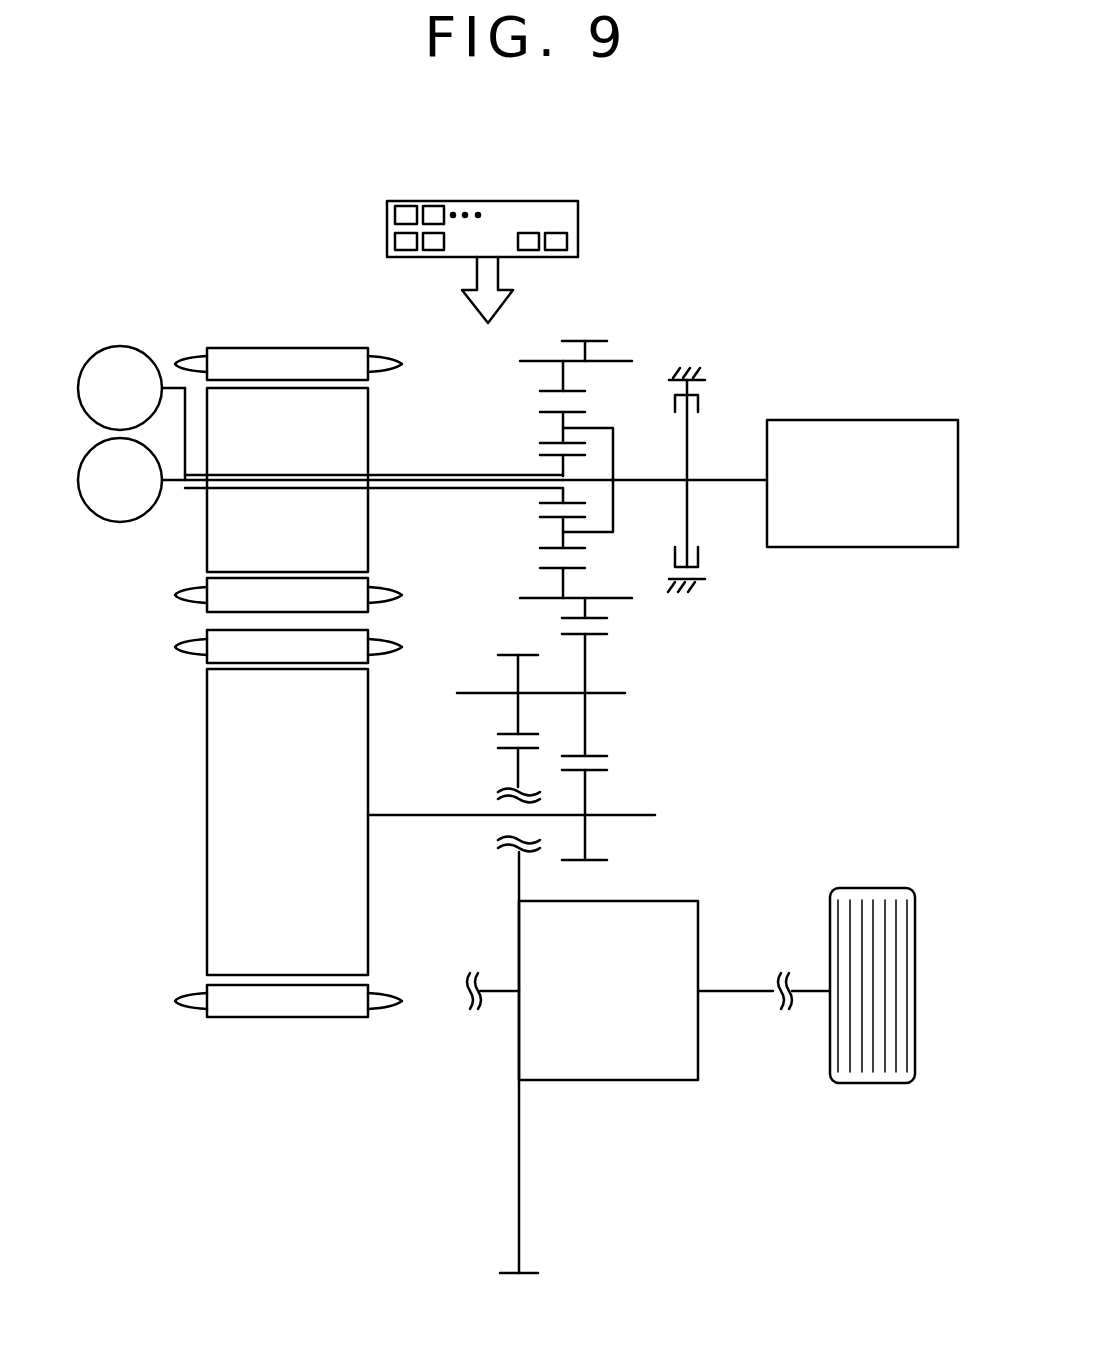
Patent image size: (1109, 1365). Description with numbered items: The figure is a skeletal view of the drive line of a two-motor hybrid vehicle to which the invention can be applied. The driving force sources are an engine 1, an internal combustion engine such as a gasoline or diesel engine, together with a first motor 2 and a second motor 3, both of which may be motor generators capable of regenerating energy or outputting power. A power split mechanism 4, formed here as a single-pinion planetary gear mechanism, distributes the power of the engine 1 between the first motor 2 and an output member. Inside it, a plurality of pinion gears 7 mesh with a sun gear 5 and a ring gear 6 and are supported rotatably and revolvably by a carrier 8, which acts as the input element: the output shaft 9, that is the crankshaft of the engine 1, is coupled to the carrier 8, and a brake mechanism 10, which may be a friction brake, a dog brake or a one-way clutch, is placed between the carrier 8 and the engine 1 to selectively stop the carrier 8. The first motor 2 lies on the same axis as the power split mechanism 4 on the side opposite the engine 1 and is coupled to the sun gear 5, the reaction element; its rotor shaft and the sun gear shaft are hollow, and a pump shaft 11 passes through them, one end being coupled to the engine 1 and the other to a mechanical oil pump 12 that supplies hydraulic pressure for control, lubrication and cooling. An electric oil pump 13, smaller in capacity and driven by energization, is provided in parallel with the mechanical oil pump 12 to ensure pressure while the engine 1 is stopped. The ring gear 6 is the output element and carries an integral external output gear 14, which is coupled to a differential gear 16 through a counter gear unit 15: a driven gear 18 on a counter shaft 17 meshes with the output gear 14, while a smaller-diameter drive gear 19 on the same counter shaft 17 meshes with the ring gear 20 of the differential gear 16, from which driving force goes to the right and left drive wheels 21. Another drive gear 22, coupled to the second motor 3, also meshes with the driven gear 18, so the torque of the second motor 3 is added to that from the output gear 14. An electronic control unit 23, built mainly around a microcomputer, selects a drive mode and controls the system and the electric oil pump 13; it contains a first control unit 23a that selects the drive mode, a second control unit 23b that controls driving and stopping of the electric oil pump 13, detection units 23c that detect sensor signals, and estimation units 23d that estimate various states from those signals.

The engine 1 is at (860, 418).
The first motor 2 is at (287, 324).
The second motor 3 is at (177, 946).
The power split mechanism 4 is at (557, 448).
The sun gear 5 is at (540, 458).
The ring gear 6 is at (540, 392).
The pinion gears 7 is at (540, 412).
The carrier 8 is at (598, 425).
The output shaft 9 is at (730, 482).
The brake mechanism 10 is at (700, 402).
The pump shaft 11 is at (186, 497).
The mechanical oil pump 12 is at (120, 524).
The electric oil pump 13 is at (130, 345).
The output gear 14 is at (590, 338).
The counter gear unit 15 is at (553, 751).
The differential gear 16 is at (700, 915).
The counter shaft 17 is at (622, 690).
The driven gear 18 is at (600, 755).
The drive gear 19 is at (505, 656).
The ring gear 20 is at (505, 751).
The drive wheels 21 is at (875, 886).
The drive gear 22 is at (600, 860).
The electronic control unit 23 is at (483, 240).
The first control unit 23a is at (395, 243).
The second control unit 23b is at (428, 250).
The detection units 23c is at (392, 213).
The estimation units 23d is at (528, 232).